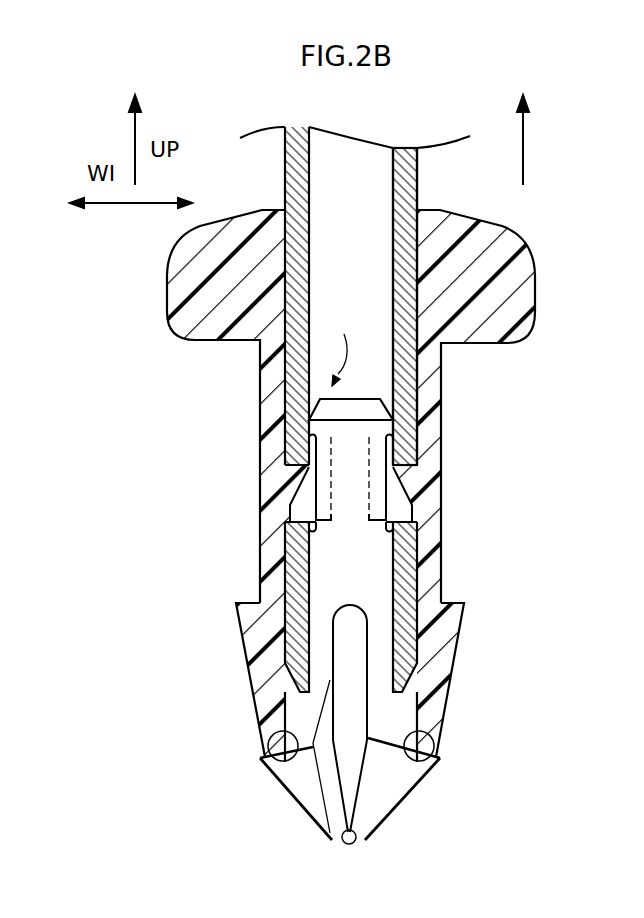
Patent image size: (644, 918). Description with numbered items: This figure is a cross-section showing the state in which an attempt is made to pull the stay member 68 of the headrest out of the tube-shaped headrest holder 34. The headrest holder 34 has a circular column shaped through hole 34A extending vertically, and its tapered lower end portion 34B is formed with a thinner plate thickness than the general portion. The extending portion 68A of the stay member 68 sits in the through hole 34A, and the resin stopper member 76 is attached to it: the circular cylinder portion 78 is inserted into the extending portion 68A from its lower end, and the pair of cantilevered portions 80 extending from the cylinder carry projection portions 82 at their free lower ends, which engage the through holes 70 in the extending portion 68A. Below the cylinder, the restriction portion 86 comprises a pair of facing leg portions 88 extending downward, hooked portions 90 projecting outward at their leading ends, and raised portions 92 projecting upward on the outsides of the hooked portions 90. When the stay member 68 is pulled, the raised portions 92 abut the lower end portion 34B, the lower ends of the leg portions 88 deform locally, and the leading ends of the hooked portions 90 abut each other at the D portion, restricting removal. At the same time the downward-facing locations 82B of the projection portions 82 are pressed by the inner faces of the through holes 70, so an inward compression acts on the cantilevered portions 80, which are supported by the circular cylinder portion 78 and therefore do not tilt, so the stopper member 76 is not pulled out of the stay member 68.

The headrest holder 34 is at (552, 281).
The through hole 34A is at (285, 209).
The lower end portion 34B is at (272, 725).
The extending portion 68A is at (427, 180).
The stay member 68 is at (443, 306).
The through hole 70 is at (292, 478).
The stopper member 76 is at (352, 322).
The circular cylinder portion 78 is at (336, 349).
The cantilevered portion 80 is at (288, 455).
The projection portion 82 is at (288, 489).
The downward-facing location 82B is at (302, 546).
The leg portion 88 is at (263, 690).
The raised portion 92 is at (260, 762).
The hooked portion 90 is at (284, 813).
The restriction portion 86 is at (497, 803).
The D portion D is at (352, 845).